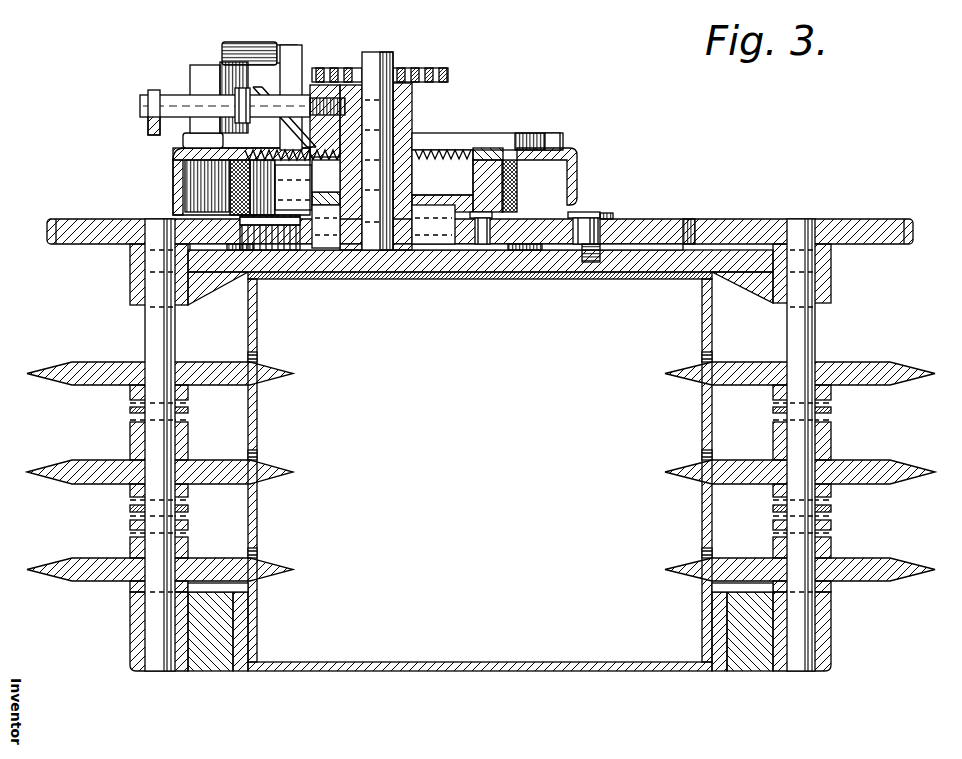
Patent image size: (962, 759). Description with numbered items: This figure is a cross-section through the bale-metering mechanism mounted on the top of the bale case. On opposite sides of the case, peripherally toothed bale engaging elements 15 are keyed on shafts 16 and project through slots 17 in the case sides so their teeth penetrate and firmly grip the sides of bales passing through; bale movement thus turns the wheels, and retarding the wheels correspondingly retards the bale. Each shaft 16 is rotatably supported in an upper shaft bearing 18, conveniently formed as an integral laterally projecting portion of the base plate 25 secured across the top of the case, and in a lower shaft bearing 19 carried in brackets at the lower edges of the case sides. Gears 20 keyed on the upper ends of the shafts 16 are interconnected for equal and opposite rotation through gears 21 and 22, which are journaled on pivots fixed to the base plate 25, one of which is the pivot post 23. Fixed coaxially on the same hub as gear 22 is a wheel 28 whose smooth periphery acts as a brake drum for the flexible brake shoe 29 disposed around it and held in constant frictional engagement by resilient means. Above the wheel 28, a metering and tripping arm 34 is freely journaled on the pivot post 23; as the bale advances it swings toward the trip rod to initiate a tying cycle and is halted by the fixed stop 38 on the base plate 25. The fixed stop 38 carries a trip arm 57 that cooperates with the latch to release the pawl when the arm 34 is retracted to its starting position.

The bale engaging element 15 is at (97, 387).
The shaft 16 is at (146, 334).
The slot 17 is at (258, 360).
The upper shaft bearing 18 is at (129, 288).
The lower shaft bearing 19 is at (138, 639).
The gear 20 is at (46, 232).
The gear 21 is at (660, 218).
The gear 22 is at (460, 279).
The pivot post 23 is at (372, 52).
The base plate 25 is at (712, 250).
The wheel 28 is at (437, 172).
The brake shoe 29 is at (517, 180).
The metering and tripping arm 34 is at (142, 108).
The fixed stop 38 is at (193, 70).
The trip arm 57 is at (222, 64).